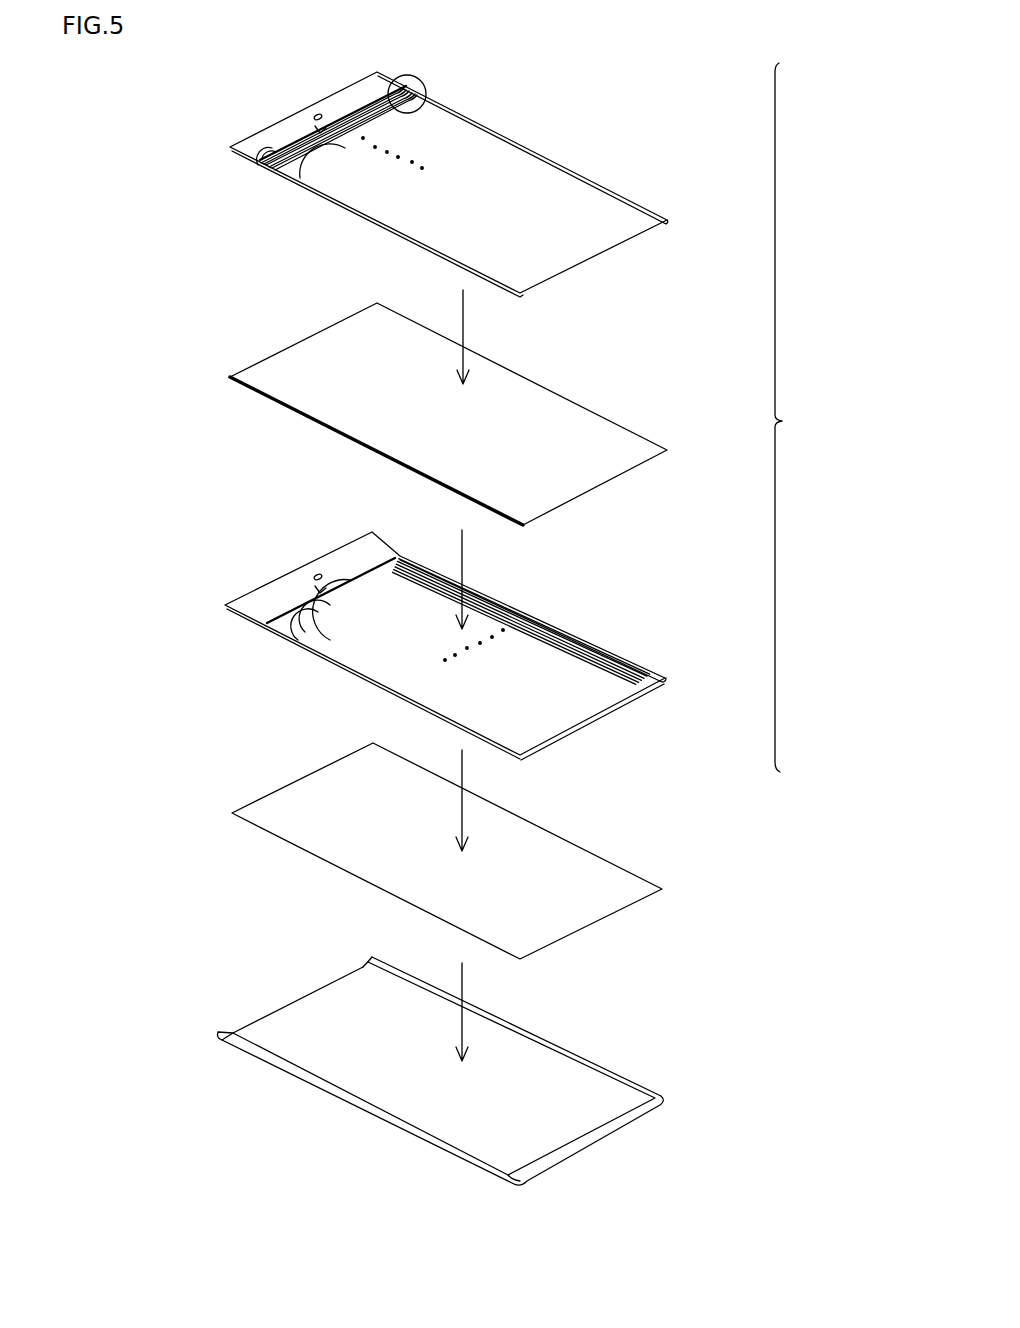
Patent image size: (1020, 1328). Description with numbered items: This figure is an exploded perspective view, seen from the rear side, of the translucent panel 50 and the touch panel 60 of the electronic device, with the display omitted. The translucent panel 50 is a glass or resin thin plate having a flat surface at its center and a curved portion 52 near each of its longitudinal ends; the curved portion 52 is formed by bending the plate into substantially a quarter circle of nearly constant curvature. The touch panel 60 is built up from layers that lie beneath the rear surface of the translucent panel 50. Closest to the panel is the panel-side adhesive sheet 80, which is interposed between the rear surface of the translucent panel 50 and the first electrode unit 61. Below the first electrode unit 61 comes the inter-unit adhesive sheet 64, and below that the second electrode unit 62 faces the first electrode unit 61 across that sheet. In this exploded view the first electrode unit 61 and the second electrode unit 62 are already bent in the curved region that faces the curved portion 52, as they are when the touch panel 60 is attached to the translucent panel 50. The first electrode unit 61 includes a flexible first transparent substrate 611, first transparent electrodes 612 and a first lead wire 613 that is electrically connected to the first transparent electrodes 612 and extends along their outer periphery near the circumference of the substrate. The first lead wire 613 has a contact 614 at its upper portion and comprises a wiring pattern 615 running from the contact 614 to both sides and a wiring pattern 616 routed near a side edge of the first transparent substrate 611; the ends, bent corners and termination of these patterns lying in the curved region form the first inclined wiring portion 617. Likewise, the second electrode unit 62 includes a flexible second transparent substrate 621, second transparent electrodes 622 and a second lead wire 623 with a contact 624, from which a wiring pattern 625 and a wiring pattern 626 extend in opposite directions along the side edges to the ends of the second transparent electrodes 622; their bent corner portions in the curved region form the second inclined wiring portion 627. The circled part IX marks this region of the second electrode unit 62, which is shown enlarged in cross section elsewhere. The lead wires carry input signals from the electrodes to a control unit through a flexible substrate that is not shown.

The translucent panel 50 is at (561, 1138).
The curved portion 52 is at (660, 1108).
The touch panel 60 is at (795, 417).
The first electrode unit 61 is at (177, 580).
The first transparent substrate 611 is at (262, 598).
The first transparent electrode 612 is at (537, 622).
The first lead wire 613 is at (210, 652).
The contact 614 is at (316, 590).
The wiring pattern 615 is at (312, 635).
The wiring pattern 616 is at (343, 600).
The first inclined wiring portion 617 is at (400, 555).
The second electrode unit 62 is at (182, 120).
The second transparent substrate 621 is at (360, 103).
The second transparent electrode 622 is at (350, 160).
The second lead wire 623 is at (180, 165).
The contact 624 is at (290, 133).
The wiring pattern 625 is at (325, 150).
The wiring pattern 626 is at (262, 158).
The second inclined wiring portion 627 is at (425, 85).
The inter-unit adhesive sheet 64 is at (585, 452).
The panel-side adhesive sheet 80 is at (590, 880).
The circled part IX is at (433, 96).